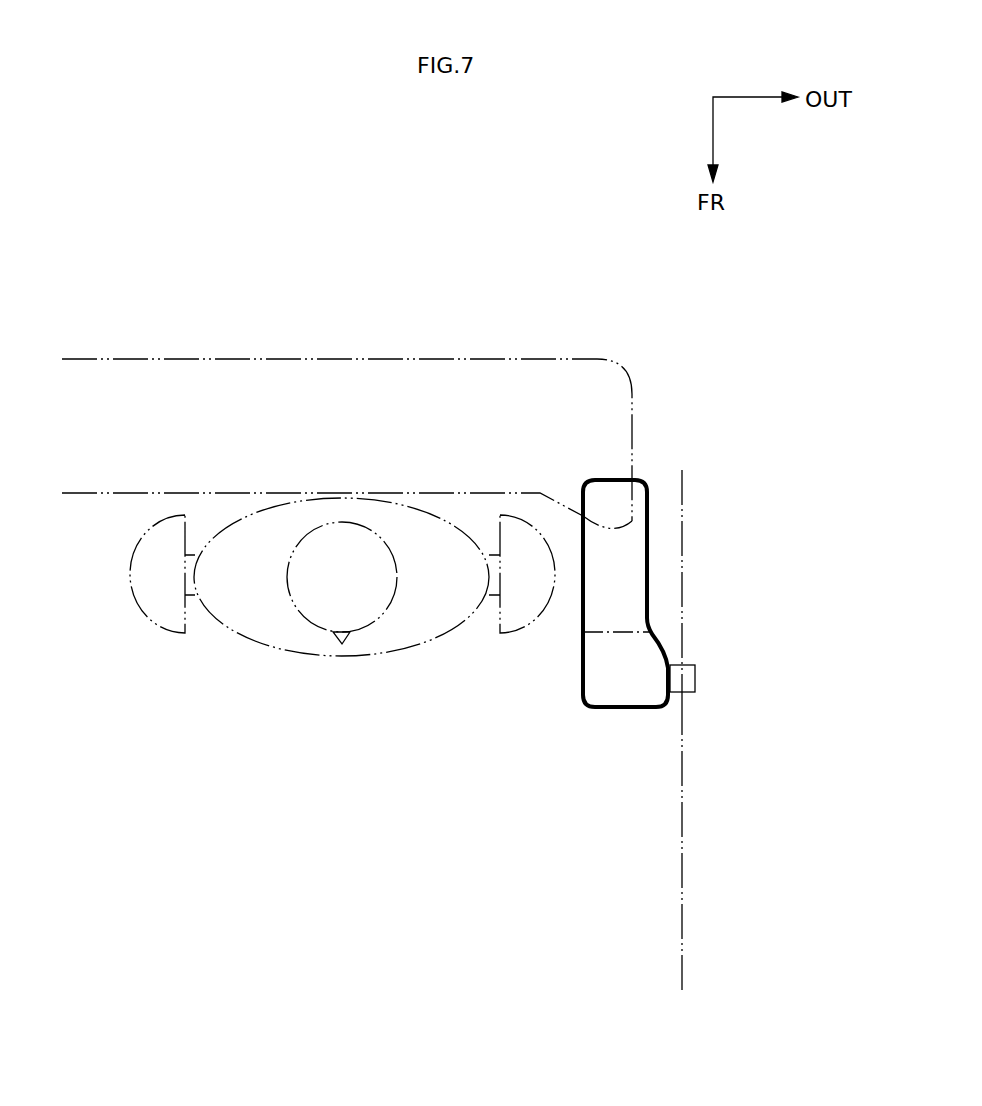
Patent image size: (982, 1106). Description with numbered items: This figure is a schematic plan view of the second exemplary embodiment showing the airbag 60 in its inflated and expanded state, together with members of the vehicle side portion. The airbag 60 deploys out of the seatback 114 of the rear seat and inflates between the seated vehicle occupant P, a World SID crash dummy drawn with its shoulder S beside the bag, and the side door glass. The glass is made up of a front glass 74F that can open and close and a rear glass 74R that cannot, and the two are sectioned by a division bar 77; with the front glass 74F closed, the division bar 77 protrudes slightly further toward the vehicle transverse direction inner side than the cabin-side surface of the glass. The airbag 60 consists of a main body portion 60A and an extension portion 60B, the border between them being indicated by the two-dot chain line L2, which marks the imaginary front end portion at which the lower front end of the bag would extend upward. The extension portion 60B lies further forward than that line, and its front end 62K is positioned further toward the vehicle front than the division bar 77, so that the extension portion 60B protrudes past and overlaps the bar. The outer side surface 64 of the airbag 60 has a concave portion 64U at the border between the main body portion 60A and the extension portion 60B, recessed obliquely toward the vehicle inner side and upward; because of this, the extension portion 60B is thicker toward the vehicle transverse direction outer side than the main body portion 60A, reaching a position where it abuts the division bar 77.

The seatback 114 is at (432, 357).
The vehicle occupant P is at (270, 654).
The shoulder of occupant S is at (523, 628).
The airbag 60 is at (639, 641).
The main body portion 60A is at (638, 568).
The extension portion 60B is at (610, 690).
The outer side surface 64 is at (647, 526).
The concave portion 64U is at (650, 620).
The front end 62K is at (627, 710).
The two-dot chain line L2 is at (608, 633).
The division bar 77 is at (690, 681).
The rear glass 74R is at (684, 634).
The front glass 74F is at (684, 820).